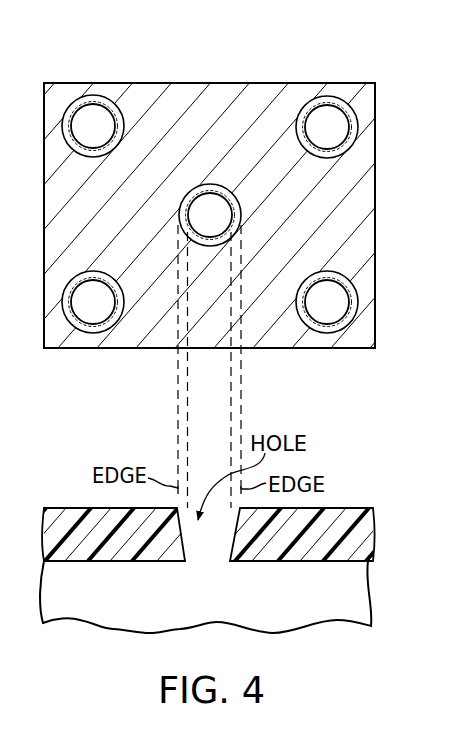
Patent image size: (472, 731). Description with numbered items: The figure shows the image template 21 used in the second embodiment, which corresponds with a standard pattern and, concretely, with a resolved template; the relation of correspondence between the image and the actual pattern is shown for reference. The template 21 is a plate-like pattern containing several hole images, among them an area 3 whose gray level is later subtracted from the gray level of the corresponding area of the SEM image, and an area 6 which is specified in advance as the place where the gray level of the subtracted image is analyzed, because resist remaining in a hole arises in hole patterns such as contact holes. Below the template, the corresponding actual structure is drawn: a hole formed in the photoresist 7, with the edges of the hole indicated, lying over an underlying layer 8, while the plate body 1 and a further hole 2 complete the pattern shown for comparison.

The image template 21 is at (93, 79).
The plate body 1 is at (127, 350).
The through hole 2 is at (328, 99).
The area of the template 3 is at (325, 320).
The area where gray level is analyzed 6 is at (210, 240).
The photoresist 7 is at (372, 547).
The substrate 8 is at (352, 594).